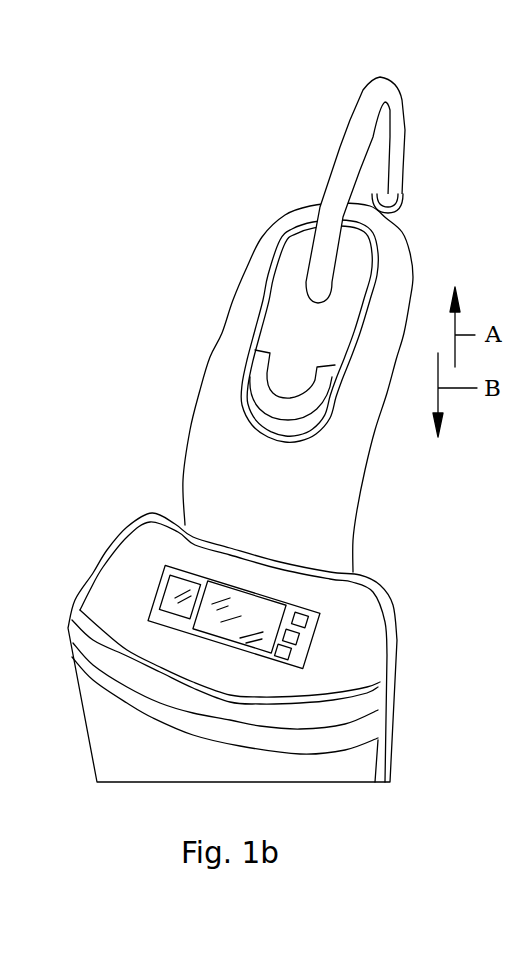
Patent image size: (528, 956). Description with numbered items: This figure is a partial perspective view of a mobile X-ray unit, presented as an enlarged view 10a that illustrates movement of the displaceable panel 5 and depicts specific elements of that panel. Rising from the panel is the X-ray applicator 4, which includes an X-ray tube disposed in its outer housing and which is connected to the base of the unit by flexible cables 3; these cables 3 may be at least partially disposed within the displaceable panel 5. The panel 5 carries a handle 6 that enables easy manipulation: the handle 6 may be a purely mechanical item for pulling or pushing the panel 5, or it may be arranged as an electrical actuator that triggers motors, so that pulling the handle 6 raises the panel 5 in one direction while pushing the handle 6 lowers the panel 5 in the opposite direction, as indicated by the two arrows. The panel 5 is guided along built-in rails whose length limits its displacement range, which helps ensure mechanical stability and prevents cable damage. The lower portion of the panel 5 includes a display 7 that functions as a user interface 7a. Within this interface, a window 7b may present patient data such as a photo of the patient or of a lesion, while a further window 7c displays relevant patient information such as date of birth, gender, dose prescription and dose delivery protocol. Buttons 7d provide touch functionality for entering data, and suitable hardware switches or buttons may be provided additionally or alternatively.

The enlarged view 10a is at (215, 147).
The flexible cables 3 is at (404, 130).
The X-ray applicator 4 is at (404, 230).
The displaceable panel 5 is at (195, 465).
The handle 6 is at (257, 378).
The display 7 is at (155, 547).
The user interface 7a is at (316, 606).
The window 7b is at (157, 590).
The window 7c is at (257, 607).
The buttons 7d is at (289, 655).